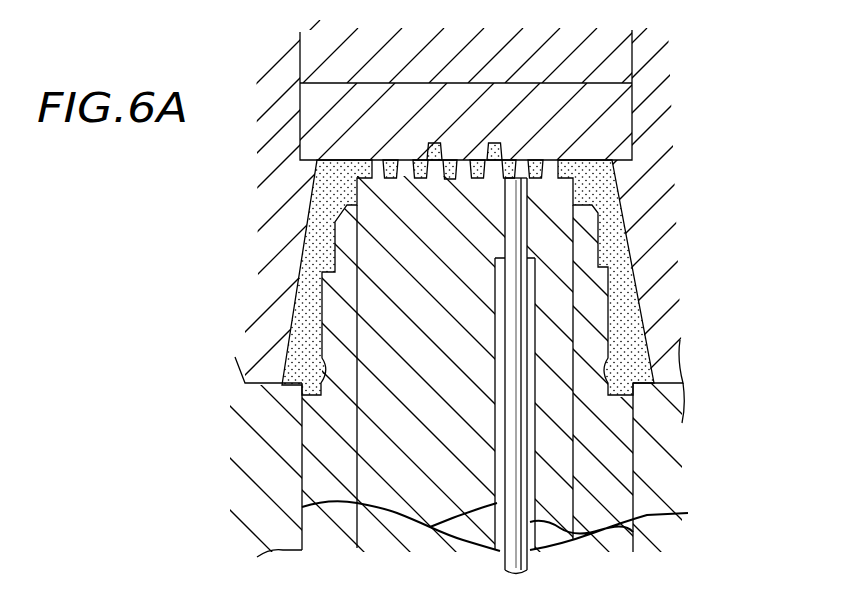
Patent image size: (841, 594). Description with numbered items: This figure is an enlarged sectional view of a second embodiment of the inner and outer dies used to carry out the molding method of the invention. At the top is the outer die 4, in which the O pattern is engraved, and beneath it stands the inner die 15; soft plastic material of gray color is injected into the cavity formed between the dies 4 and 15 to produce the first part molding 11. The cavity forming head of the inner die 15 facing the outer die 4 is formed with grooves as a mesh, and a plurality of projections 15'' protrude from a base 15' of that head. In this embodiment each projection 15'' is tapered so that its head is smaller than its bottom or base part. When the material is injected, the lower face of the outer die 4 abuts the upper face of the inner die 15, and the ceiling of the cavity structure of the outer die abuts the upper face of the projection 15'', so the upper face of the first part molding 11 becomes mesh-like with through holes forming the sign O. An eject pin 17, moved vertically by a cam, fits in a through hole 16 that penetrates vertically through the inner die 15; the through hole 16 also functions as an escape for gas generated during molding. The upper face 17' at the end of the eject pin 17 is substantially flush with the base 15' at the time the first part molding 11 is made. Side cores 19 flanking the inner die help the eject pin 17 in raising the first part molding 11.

The outer die 4 is at (638, 187).
The first part molding 11 is at (623, 282).
The inner die 15 is at (420, 365).
The base 15' is at (442, 197).
The projection 15'' is at (491, 93).
The through hole 16 is at (527, 548).
The eject pin 17 is at (457, 386).
The upper face 17' is at (497, 208).
The side core 19 is at (315, 446).